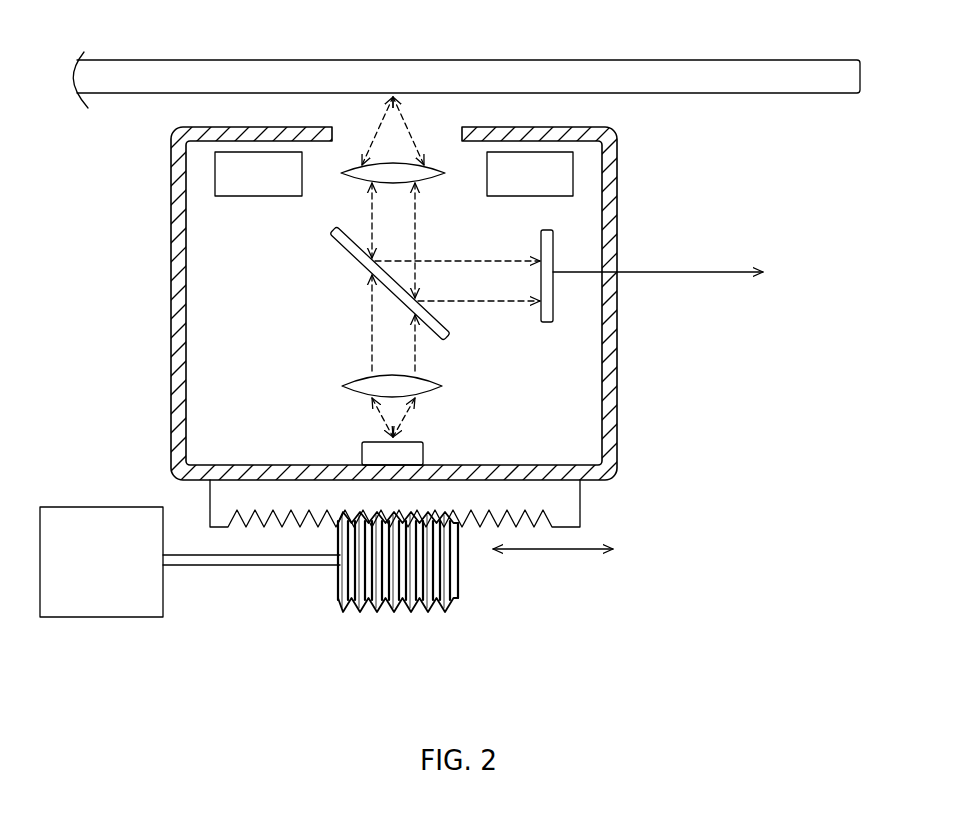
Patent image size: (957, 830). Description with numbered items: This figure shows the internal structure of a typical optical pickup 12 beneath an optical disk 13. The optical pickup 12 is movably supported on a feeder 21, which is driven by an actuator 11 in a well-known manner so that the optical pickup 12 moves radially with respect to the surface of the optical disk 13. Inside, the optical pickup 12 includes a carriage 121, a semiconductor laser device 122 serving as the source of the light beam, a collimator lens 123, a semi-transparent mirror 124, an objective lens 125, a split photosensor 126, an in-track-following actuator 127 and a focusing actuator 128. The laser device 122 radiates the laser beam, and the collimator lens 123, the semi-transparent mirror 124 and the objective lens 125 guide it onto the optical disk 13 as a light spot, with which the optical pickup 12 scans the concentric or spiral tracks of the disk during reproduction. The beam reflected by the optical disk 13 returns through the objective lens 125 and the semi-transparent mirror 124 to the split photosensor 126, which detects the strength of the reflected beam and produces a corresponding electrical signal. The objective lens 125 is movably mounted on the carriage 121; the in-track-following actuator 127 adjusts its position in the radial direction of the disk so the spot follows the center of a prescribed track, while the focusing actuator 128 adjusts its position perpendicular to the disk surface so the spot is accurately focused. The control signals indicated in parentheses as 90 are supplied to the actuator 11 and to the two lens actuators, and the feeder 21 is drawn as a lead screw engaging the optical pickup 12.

The actuator 11 is at (67, 507).
The optical pickup 12 is at (618, 421).
The optical disk 13 is at (647, 60).
The feeder 21 is at (457, 587).
The controller 90 is at (214, 174).
The carriage 121 is at (170, 357).
The semiconductor laser device 122 is at (362, 453).
The collimator lens 123 is at (347, 385).
The semi-transparent mirror 124 is at (355, 258).
The objective lens 125 is at (364, 158).
The split photosensor 126 is at (553, 307).
The in-track-following actuator 127 is at (263, 196).
The focusing actuator 128 is at (523, 196).